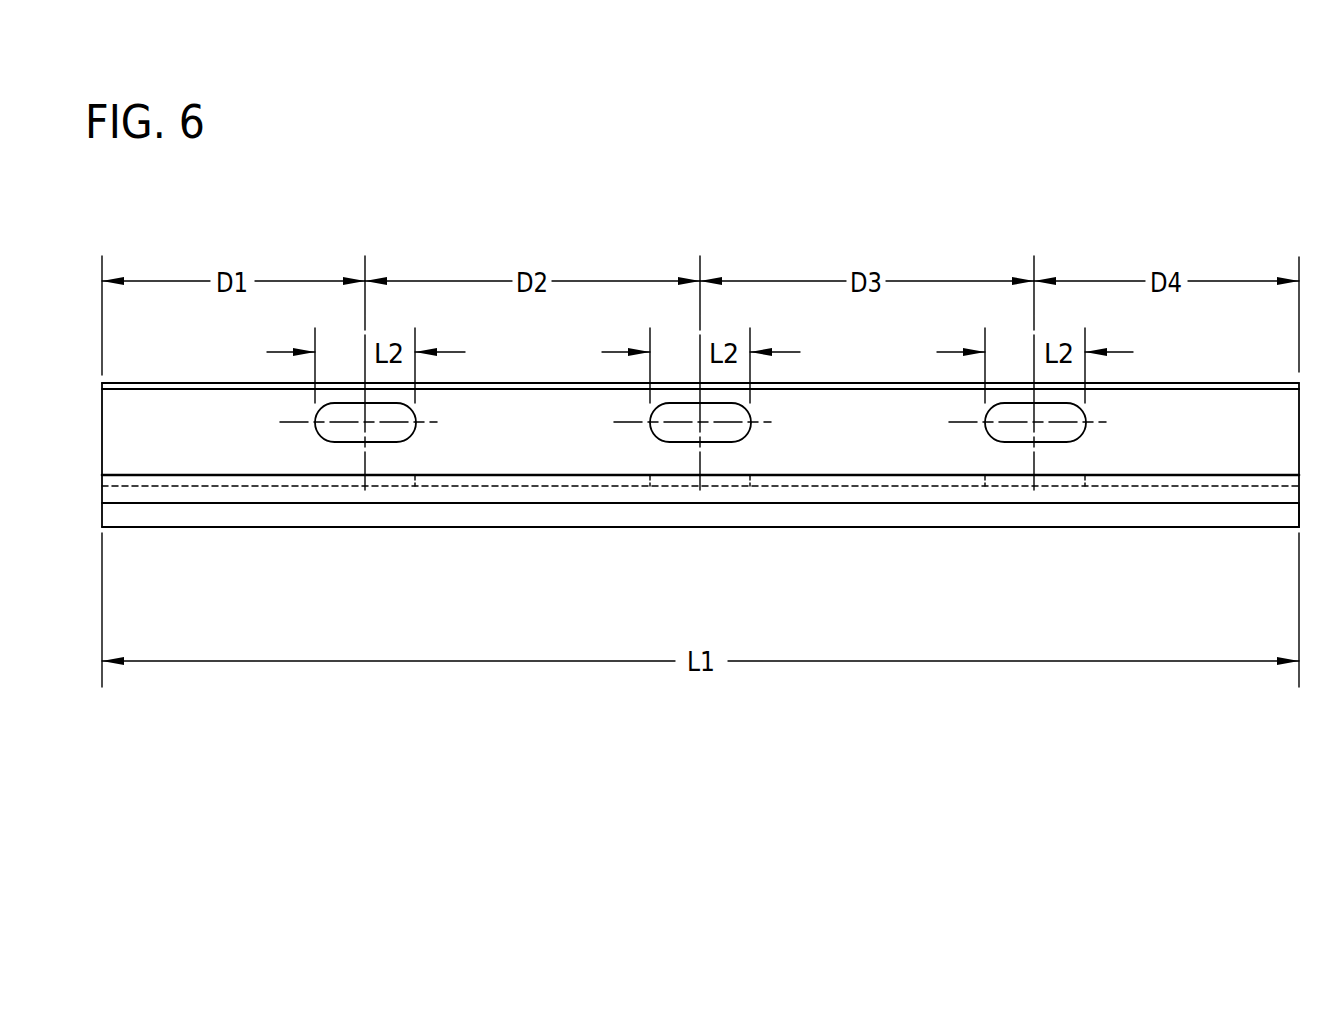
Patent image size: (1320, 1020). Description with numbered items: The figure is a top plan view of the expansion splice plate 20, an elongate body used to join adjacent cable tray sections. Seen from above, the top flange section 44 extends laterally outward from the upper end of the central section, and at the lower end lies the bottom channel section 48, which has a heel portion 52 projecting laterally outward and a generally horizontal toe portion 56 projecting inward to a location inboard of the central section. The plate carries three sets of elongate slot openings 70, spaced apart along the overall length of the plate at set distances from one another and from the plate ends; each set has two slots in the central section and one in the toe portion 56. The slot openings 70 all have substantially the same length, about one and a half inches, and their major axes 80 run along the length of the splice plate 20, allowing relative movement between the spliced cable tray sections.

The expansion splice plate 20 is at (952, 222).
The top flange section 44 is at (180, 493).
The bottom channel section 48 is at (818, 528).
The heel portion 52 is at (1110, 528).
The toe portion 56 is at (133, 443).
The slot openings 70 is at (315, 440).
The major axes 80 is at (445, 423).